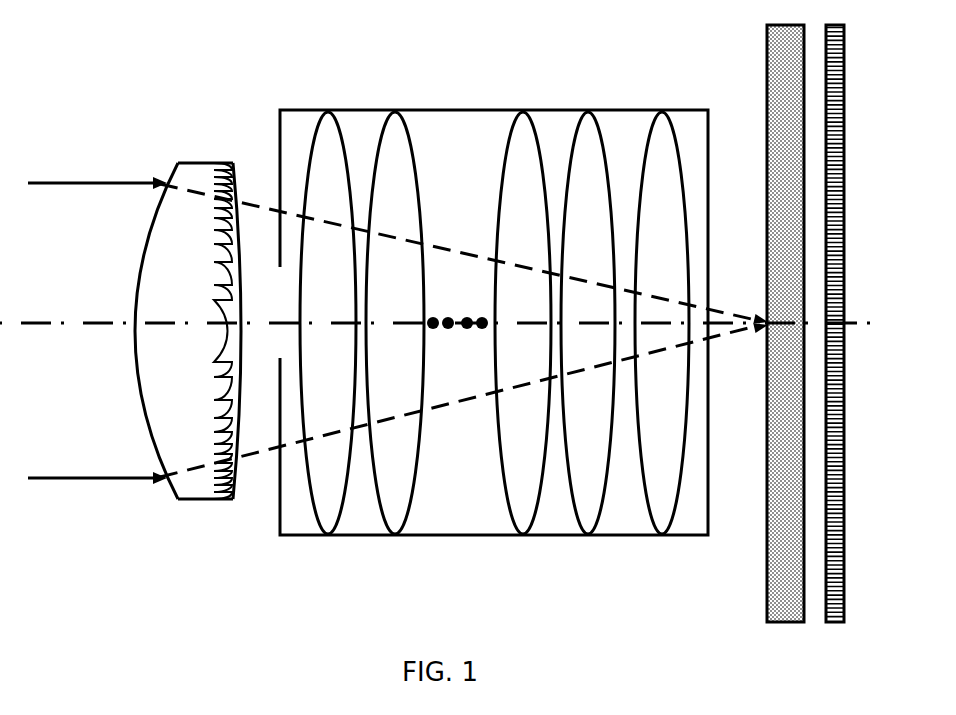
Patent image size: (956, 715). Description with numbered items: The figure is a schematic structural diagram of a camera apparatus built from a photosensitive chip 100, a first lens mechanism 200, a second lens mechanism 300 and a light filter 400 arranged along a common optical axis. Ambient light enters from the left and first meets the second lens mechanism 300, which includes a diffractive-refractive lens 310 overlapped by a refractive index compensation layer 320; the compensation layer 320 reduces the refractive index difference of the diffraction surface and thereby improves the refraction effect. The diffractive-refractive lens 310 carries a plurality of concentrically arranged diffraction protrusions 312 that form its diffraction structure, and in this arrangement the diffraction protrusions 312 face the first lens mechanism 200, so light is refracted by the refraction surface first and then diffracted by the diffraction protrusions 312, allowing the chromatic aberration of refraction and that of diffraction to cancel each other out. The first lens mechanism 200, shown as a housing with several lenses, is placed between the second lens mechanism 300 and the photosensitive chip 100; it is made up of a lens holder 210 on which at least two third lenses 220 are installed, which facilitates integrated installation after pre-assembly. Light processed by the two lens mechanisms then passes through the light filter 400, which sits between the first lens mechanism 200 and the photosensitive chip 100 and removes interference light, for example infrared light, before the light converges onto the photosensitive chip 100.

The photosensitive chip 100 is at (846, 93).
The first lens mechanism 200 is at (494, 276).
The lens holder 210 is at (440, 110).
The third lens 220 is at (523, 127).
The second lens mechanism 300 is at (218, 270).
The diffractive-refractive lens 310 is at (193, 173).
The diffraction protrusion 312 is at (215, 163).
The refractive index compensation layer 320 is at (243, 173).
The light filter 400 is at (800, 127).